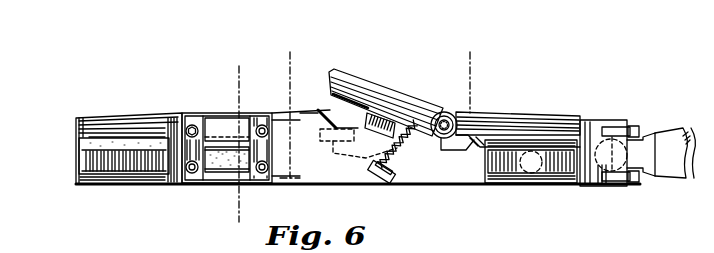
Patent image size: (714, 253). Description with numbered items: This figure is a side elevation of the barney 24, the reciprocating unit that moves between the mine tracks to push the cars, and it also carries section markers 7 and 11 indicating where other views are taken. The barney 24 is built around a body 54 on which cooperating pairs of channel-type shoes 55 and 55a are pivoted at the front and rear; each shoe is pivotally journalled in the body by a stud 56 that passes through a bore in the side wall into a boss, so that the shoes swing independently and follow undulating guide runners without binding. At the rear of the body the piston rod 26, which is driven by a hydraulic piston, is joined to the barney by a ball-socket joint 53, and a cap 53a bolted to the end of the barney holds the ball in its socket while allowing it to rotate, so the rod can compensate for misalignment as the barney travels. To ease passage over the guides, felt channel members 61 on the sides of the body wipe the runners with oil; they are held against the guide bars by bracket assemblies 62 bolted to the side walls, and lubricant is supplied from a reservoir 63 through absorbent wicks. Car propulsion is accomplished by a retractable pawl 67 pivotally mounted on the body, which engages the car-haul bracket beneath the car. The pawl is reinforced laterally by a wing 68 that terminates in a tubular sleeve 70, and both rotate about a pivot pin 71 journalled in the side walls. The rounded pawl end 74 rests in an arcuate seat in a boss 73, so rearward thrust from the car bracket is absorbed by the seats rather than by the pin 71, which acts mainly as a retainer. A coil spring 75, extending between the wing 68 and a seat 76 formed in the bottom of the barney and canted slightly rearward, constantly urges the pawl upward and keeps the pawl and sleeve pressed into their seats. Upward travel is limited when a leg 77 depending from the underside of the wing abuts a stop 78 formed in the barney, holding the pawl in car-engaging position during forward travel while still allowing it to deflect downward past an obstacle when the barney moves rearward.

The section line 7- 7 is at (272, 66).
The section line 11- 11 is at (252, 78).
The barney 24 is at (159, 116).
The piston rod 26 is at (662, 172).
The ball-socket joint 53 is at (598, 172).
The cap 53a is at (619, 128).
The body 54 is at (329, 181).
The channel-type shoe 55 is at (153, 178).
The channel-type shoe 55a is at (513, 178).
The stud 56 is at (540, 178).
The felt channel member 61 is at (229, 176).
The bracket assembly 62 is at (219, 126).
The reservoir 63 is at (277, 185).
The retractable pawl 67 is at (386, 92).
The wing 68 is at (372, 118).
The tubular sleeve 70 is at (441, 116).
The pivot pin 71 is at (447, 116).
The boss 73 is at (490, 123).
The pawl end 74 is at (456, 149).
The coil spring 75 is at (395, 158).
The seat 76 is at (372, 181).
The leg 77 is at (358, 161).
The stop 78 is at (333, 142).